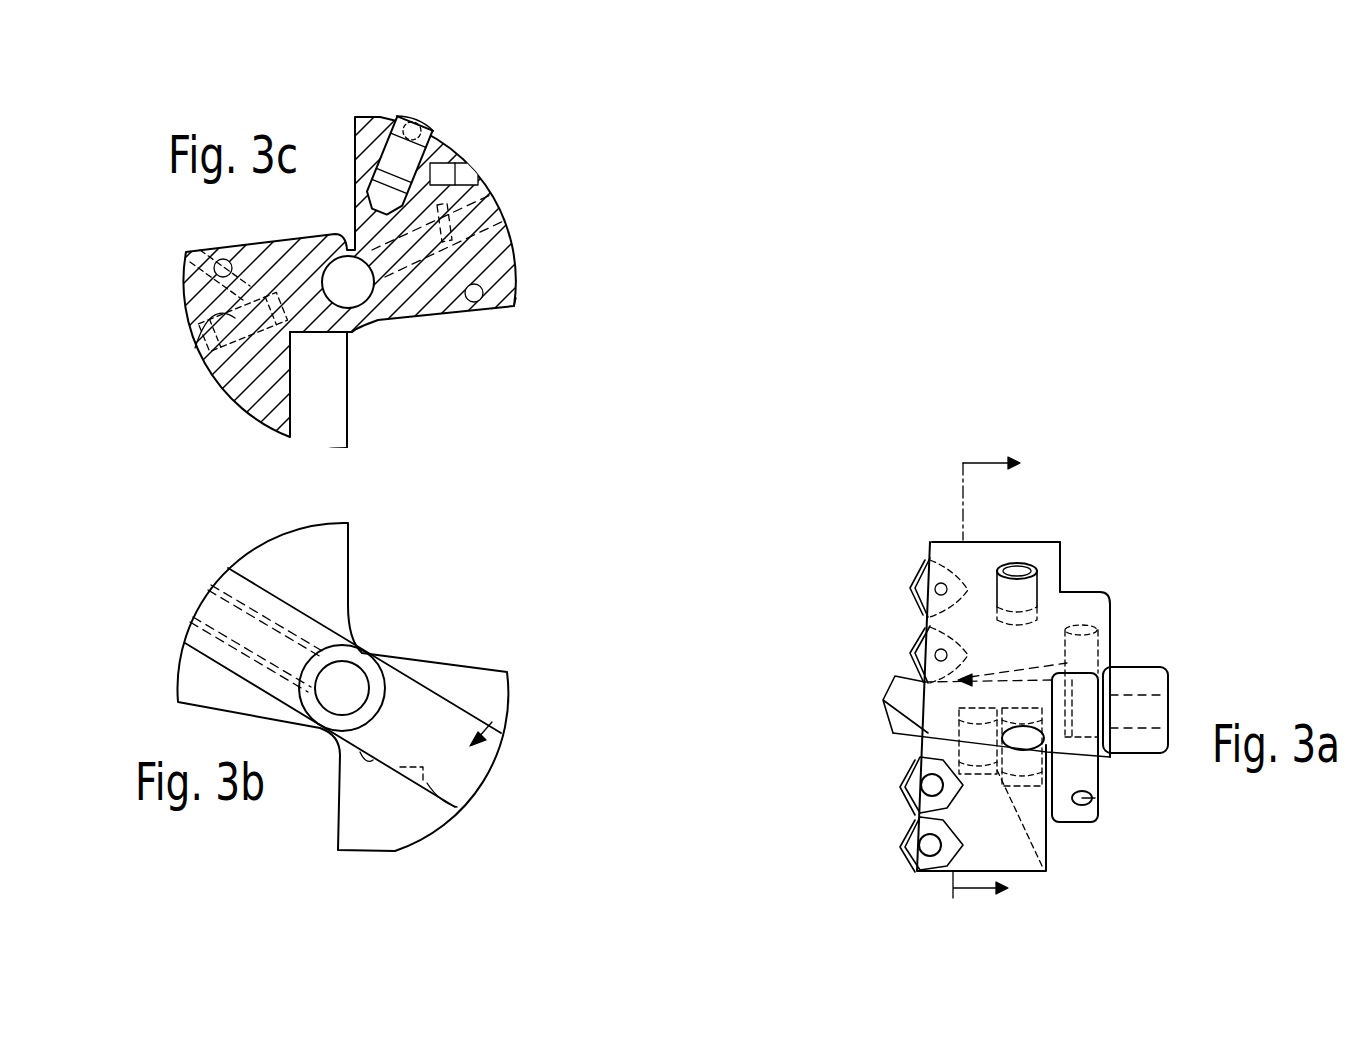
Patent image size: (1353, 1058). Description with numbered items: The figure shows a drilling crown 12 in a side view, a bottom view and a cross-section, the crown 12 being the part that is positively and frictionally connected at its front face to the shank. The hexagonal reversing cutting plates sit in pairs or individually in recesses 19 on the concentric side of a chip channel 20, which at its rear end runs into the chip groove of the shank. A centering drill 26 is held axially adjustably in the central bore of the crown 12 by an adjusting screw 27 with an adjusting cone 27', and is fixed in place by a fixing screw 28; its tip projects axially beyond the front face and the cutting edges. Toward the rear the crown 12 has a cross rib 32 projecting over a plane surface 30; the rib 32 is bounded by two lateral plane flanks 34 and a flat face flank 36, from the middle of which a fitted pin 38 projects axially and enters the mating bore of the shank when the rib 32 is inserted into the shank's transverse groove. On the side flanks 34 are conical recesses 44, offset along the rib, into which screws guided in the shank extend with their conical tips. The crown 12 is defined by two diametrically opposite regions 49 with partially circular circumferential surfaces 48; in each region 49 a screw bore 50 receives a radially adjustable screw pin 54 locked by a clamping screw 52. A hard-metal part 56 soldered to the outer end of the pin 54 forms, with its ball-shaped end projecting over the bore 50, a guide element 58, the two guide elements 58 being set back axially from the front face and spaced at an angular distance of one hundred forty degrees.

In FIG. 3C, the drilling crown 12 is at (508, 298).
In FIG. 3B, the drilling crown 12 is at (507, 728).
In FIG. 3A, the drilling crown 12 is at (1046, 546).
In FIG. 3C, the recess 19 is at (323, 383).
In FIG. 3C, the chip channel 20 is at (283, 240).
In FIG. 3B, the chip channel 20 is at (348, 612).
In FIG. 3A, the chip channel 20 is at (1001, 677).
In FIG. 3A, the centering drill 26 is at (903, 723).
In FIG. 3C, the adjusting screw 27 is at (434, 201).
In FIG. 3A, the adjusting screw 27 is at (1151, 660).
In FIG. 3A, the adjusting cone 27' is at (1131, 691).
In FIG. 3A, the fixing screw 28 is at (1078, 763).
In FIG. 3B, the plane surface 30 is at (498, 672).
In FIG. 3A, the plane surface 30 is at (1060, 570).
In FIG. 3B, the cross rib 32 is at (508, 720).
In FIG. 3A, the cross rib 32 is at (1085, 613).
In FIG. 3B, the lateral plane flank 34 is at (440, 728).
In FIG. 3A, the lateral plane flank 34 is at (1067, 827).
In FIG. 3B, the face flank 36 is at (483, 693).
In FIG. 3A, the face flank 36 is at (1105, 773).
In FIG. 3B, the fitted pin 38 is at (373, 667).
In FIG. 3A, the fitted pin 38 is at (1153, 682).
In FIG. 3B, the conical recess 44 is at (280, 600).
In FIG. 3A, the conical recess 44 is at (1065, 810).
In FIG. 3C, the partially circular circumferential surface 48 is at (510, 238).
In FIG. 3B, the partially circular circumferential surface 48 is at (437, 827).
In FIG. 3A, the partially circular circumferential surface 48 is at (963, 562).
In FIG. 3C, the region 49 is at (497, 253).
In FIG. 3B, the region 49 is at (383, 817).
In FIG. 3C, the screw bore 50 is at (445, 158).
In FIG. 3C, the clamping screw 52 is at (467, 157).
In FIG. 3C, the screw pin 54 is at (393, 128).
In FIG. 3C, the hard-metal part 56 is at (415, 125).
In FIG. 3C, the guide element 58 is at (432, 128).
In FIG. 3A, the guide element 58 is at (1017, 570).